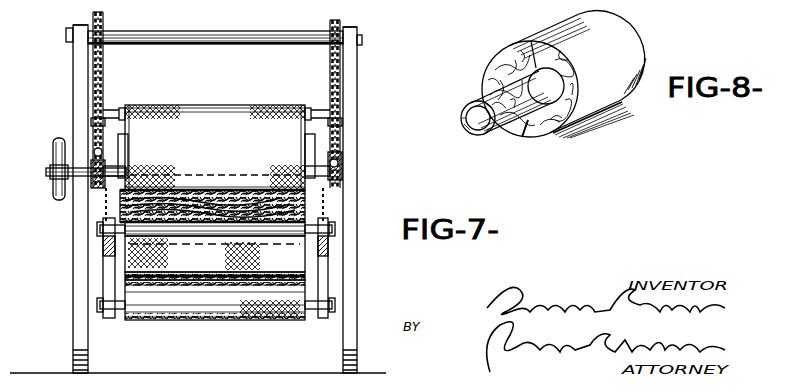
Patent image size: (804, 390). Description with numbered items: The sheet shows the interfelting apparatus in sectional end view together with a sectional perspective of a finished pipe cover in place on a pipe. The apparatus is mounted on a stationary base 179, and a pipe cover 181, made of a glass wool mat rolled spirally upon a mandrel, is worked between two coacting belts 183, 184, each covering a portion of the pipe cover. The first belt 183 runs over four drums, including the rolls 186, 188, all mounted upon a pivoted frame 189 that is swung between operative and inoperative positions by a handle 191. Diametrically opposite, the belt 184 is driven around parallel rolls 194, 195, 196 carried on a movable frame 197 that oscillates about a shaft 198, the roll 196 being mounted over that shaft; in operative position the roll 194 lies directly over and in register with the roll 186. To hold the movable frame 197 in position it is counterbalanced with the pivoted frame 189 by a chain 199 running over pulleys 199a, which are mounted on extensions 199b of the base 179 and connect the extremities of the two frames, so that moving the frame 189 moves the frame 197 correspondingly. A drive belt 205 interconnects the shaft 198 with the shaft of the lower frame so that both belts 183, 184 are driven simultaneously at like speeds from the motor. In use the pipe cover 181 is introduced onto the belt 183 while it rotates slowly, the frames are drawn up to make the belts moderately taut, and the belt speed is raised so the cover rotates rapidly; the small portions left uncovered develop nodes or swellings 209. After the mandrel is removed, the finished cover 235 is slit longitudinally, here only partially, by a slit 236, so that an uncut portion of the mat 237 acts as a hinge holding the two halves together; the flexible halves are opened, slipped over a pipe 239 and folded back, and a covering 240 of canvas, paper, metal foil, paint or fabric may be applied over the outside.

In FIG. 7, the stationary base 179 is at (76, 322).
In FIG. 7, the pipe cover 181 is at (288, 165).
In FIG. 7, the belt 183 is at (198, 319).
In FIG. 7, the belt 184 is at (243, 92).
In FIG. 7, the roll 186 is at (214, 235).
In FIG. 7, the roll 188 is at (115, 319).
In FIG. 7, the pivoted frame 189 is at (108, 275).
In FIG. 7, the handle 191 is at (342, 165).
In FIG. 7, the roll 194 is at (130, 165).
In FIG. 7, the roll 195 is at (125, 107).
In FIG. 7, the roll 196 is at (128, 143).
In FIG. 7, the movable frame 197 is at (93, 132).
In FIG. 7, the shaft 198 is at (52, 168).
In FIG. 7, the chain 199 is at (103, 66).
In FIG. 7, the pulleys 199a is at (104, 22).
In FIG. 7, the extensions 199b is at (82, 79).
In FIG. 7, the drive belt 205 is at (58, 141).
In FIG. 7, the nodes or swellings 209 is at (244, 190).
In FIG. 8, the cover 235 is at (604, 104).
In FIG. 8, the slit 236 is at (558, 56).
In FIG. 8, the mat portion 237 is at (524, 137).
In FIG. 8, the pipe 239 is at (480, 136).
In FIG. 8, the covering 240 is at (646, 60).